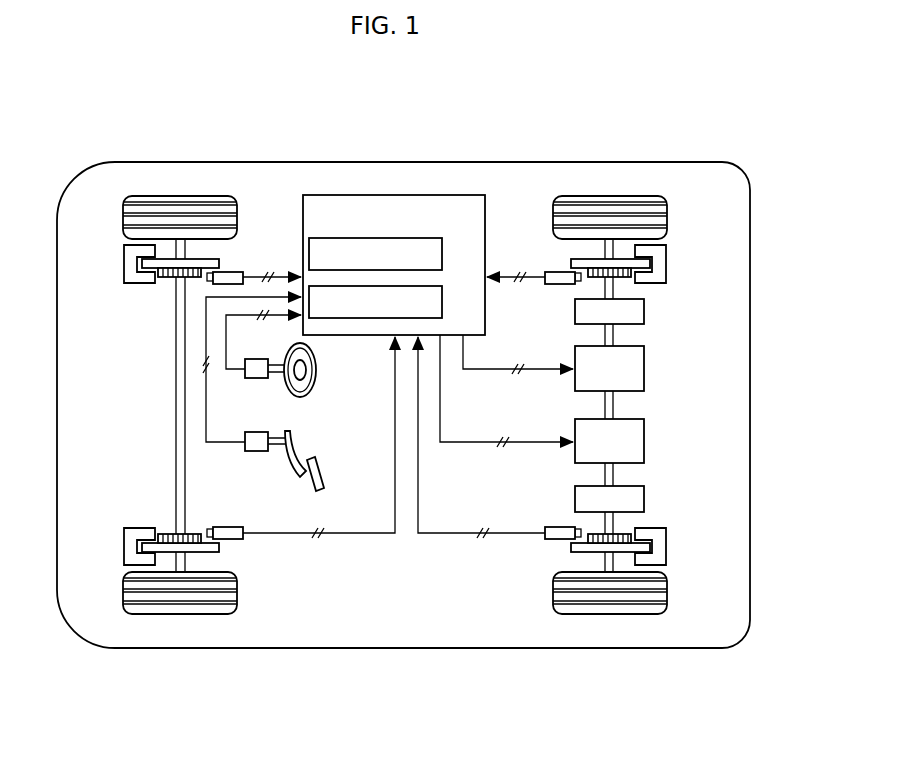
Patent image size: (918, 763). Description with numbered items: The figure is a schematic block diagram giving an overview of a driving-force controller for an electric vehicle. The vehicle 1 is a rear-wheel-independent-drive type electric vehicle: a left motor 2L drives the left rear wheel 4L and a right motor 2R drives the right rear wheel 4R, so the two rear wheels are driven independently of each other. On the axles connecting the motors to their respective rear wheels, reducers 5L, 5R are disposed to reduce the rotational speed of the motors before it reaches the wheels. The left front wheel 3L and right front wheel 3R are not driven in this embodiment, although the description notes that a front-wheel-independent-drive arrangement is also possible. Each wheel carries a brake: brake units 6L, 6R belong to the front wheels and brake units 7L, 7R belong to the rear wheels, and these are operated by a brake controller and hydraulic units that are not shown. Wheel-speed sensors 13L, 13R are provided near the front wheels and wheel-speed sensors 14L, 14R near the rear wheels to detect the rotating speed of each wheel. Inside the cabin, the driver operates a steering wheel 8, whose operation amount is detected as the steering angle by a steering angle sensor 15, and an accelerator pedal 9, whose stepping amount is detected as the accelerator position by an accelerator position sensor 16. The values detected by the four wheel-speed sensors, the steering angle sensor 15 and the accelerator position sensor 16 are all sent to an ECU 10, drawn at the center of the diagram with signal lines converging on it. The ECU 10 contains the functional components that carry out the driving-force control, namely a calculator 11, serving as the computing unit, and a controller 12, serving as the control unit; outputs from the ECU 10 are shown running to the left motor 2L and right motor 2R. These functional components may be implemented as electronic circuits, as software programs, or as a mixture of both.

The vehicle 1 is at (776, 190).
The right motor 2R is at (645, 368).
The left motor 2L is at (645, 441).
The right front wheel 3R is at (177, 196).
The left front wheel 3L is at (178, 614).
The right rear wheel 4R is at (610, 196).
The left rear wheel 4L is at (610, 614).
The reducer 5R is at (645, 310).
The reducer 5L is at (645, 499).
The brake unit 6R is at (131, 294).
The brake unit 6L is at (128, 522).
The brake unit 7R is at (673, 258).
The brake unit 7L is at (673, 550).
The steering wheel 8 is at (317, 370).
The accelerator pedal 9 is at (320, 478).
The ECU 10 is at (394, 227).
The calculator 11 is at (444, 258).
The controller 12 is at (444, 306).
The wheel-speed sensor 13R is at (240, 273).
The wheel-speed sensor 13L is at (245, 540).
The wheel-speed sensor 14R is at (553, 285).
The wheel-speed sensor 14L is at (553, 527).
The steering angle sensor 15 is at (257, 380).
The accelerator position sensor 16 is at (257, 453).